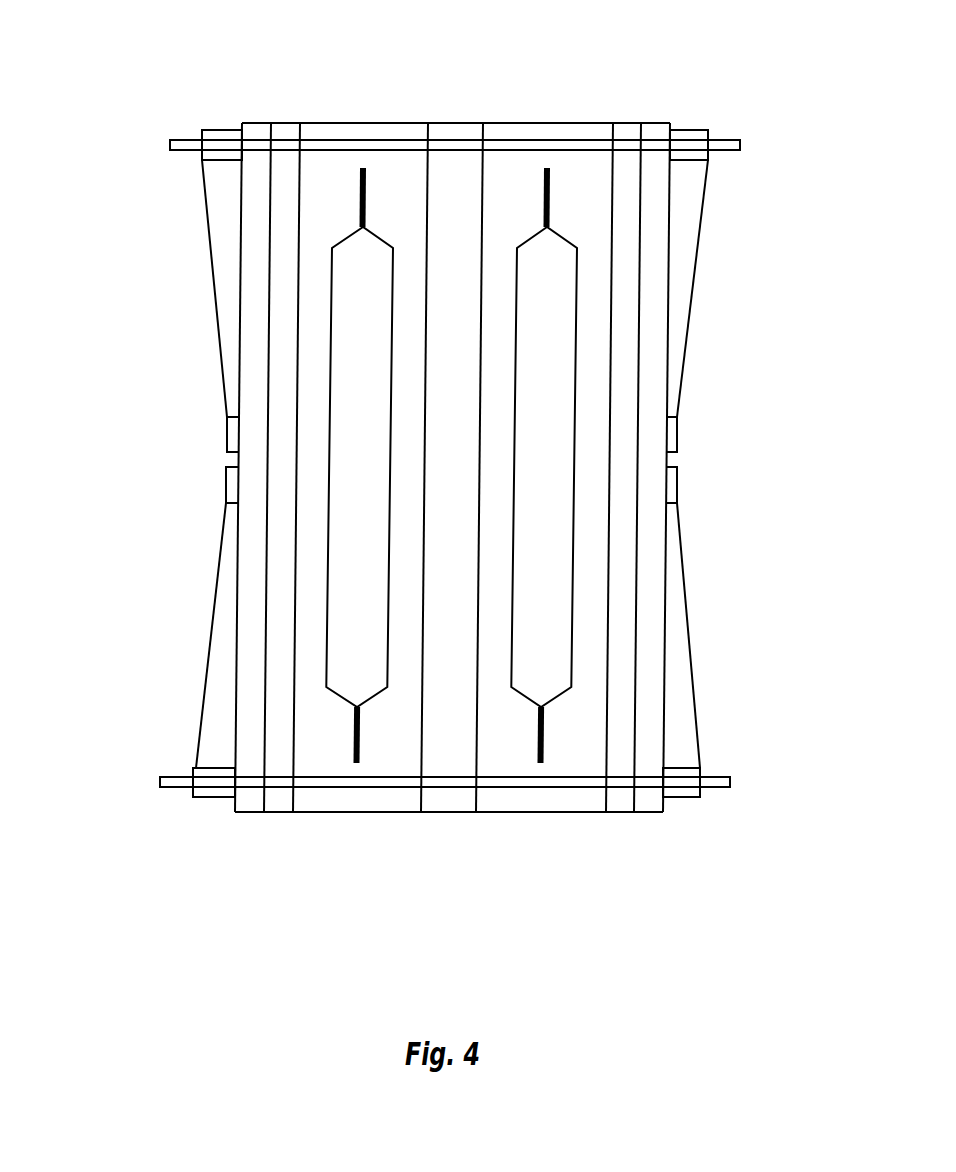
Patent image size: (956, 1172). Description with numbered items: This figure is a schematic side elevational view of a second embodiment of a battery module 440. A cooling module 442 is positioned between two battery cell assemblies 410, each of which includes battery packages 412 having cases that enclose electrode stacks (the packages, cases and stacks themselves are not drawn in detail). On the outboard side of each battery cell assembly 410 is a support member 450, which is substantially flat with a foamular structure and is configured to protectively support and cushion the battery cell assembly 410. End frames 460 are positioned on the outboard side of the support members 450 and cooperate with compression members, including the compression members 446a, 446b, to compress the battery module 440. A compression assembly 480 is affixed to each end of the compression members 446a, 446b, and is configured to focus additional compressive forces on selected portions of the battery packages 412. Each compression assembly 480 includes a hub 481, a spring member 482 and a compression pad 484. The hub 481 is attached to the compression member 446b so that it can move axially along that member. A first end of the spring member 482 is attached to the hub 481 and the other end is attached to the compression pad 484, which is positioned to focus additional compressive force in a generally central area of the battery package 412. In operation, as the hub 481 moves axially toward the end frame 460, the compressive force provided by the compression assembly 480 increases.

The battery module 440 is at (530, 408).
The battery cell assembly 410 is at (317, 813).
The battery package 412 is at (331, 565).
The cooling module 442 is at (443, 814).
The support member 450 is at (277, 813).
The end frame 460 is at (250, 813).
The compression member 446a is at (170, 777).
The compression member 446b is at (185, 142).
The compression assembly 480 is at (232, 128).
The hub 481 is at (220, 128).
The spring member 482 is at (213, 290).
The compression pad 484 is at (225, 447).